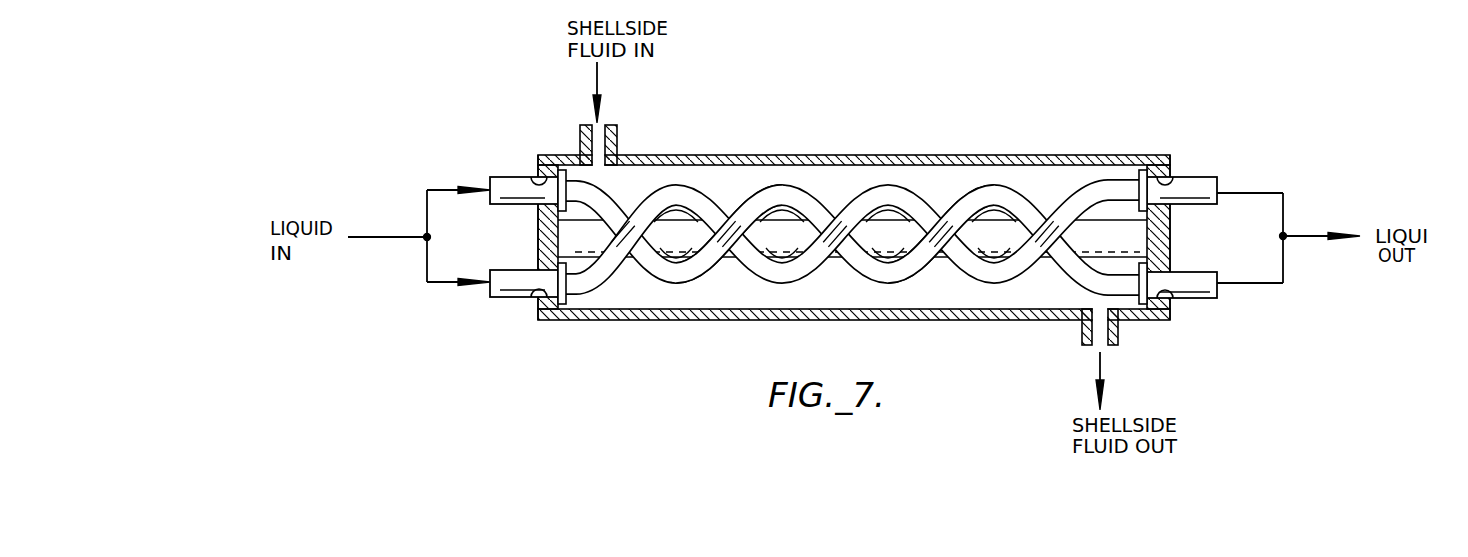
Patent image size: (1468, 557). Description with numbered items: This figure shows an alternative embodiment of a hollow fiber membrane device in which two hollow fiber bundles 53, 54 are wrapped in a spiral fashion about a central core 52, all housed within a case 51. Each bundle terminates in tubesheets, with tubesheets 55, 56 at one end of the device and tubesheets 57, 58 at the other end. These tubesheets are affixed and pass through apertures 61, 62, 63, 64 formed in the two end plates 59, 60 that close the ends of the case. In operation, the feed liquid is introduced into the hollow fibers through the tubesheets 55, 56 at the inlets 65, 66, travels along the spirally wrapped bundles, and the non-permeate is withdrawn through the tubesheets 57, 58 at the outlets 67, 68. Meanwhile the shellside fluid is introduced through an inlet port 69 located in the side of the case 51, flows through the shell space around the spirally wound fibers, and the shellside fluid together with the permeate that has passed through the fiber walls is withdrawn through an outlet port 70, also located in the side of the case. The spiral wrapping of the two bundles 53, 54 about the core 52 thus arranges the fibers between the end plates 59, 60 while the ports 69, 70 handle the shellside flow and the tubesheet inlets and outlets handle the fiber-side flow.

The case 51 is at (1010, 155).
The core 52 is at (717, 227).
The hollow fiber bundle 53 is at (615, 280).
The hollow fiber bundle 54 is at (728, 278).
The tubesheet 55 is at (507, 177).
The tubesheet 56 is at (500, 298).
The tubesheet 57 is at (1200, 178).
The tubesheet 58 is at (1200, 298).
The end plate 59 is at (530, 230).
The end plate 60 is at (1182, 241).
The aperture 61 is at (533, 299).
The aperture 62 is at (536, 178).
The aperture 63 is at (1190, 177).
The aperture 64 is at (1185, 299).
The inlet 65 is at (488, 188).
The inlet 66 is at (488, 292).
The outlet 67 is at (1220, 190).
The outlet 68 is at (1222, 292).
The inlet port 69 is at (610, 125).
The outlet port 70 is at (1092, 345).